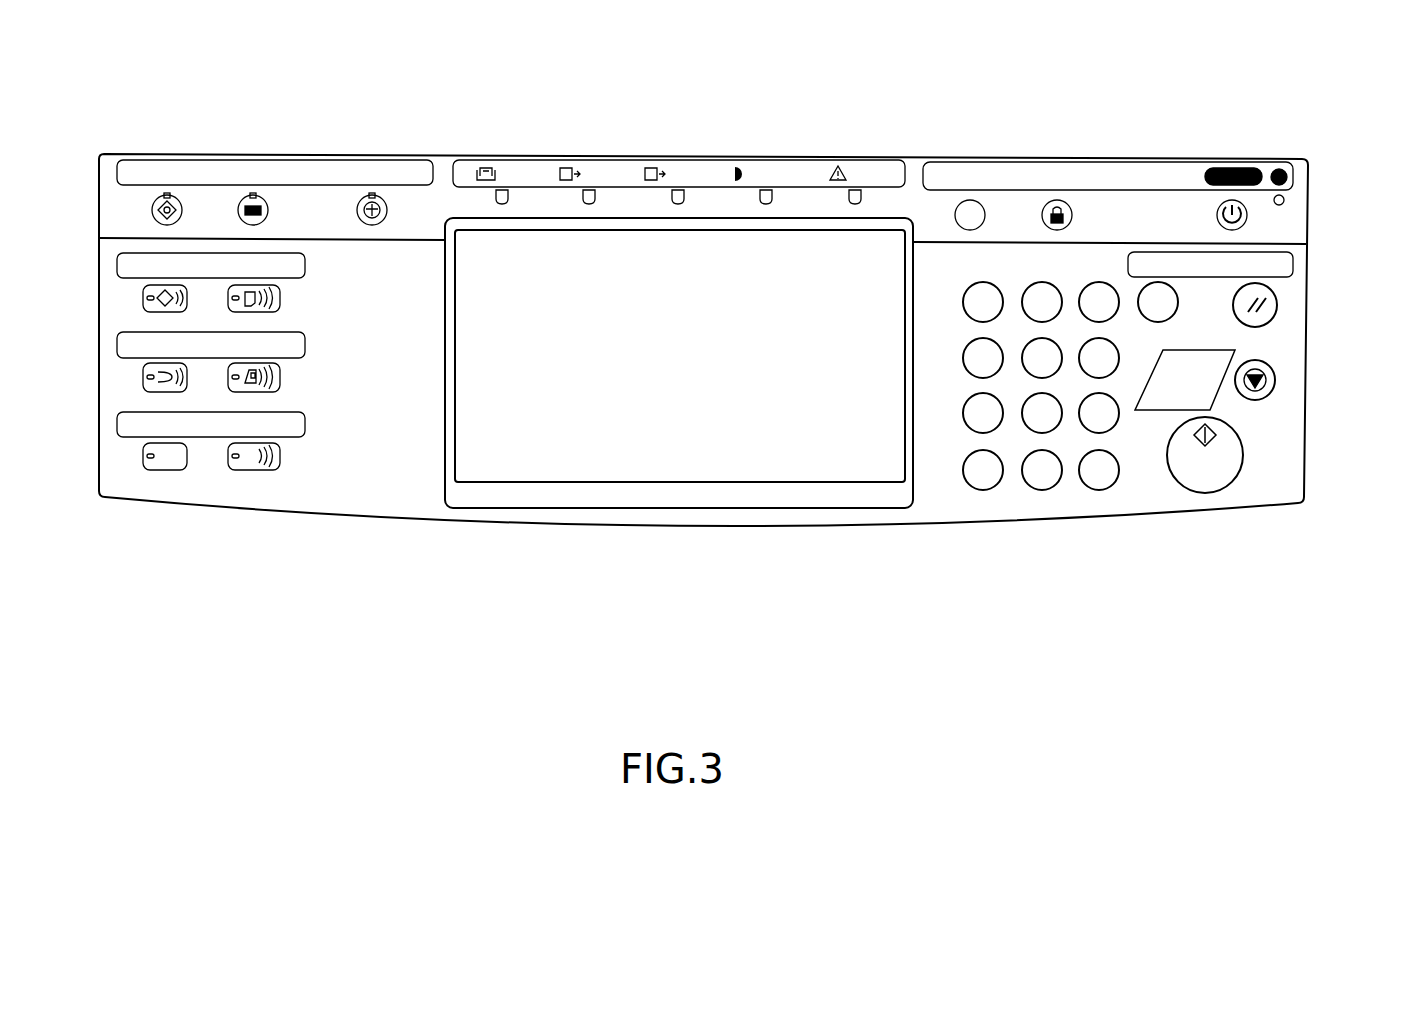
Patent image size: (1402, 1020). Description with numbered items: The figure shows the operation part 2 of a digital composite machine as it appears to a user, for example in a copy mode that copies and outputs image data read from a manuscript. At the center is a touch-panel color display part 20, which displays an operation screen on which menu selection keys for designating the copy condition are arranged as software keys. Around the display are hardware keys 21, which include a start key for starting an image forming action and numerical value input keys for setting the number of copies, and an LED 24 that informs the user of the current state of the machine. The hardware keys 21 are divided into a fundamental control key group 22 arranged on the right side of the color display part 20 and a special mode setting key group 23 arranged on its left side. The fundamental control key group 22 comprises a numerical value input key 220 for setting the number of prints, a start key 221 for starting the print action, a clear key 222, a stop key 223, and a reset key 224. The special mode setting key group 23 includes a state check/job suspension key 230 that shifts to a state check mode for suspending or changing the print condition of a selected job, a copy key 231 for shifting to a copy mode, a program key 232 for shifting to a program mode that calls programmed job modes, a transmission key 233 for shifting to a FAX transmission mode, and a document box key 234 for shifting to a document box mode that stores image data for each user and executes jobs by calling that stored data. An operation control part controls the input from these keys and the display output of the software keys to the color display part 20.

The operation part 2 is at (689, 590).
The touch-panel color display part 20 is at (545, 483).
The hardware keys 21 is at (320, 558).
The fundamental control key group 22 is at (1292, 532).
The numerical value input key 220 is at (951, 500).
The start key 221 is at (1243, 455).
The clear key 222 is at (1143, 285).
The stop key 223 is at (1276, 380).
The reset key 224 is at (1277, 305).
The special mode setting key group 23 is at (298, 523).
The state check/job suspension key 230 is at (143, 297).
The copy key 231 is at (280, 298).
The program key 232 is at (143, 375).
The transmission key 233 is at (280, 374).
The document box key 234 is at (280, 455).
The LED 24 is at (873, 155).